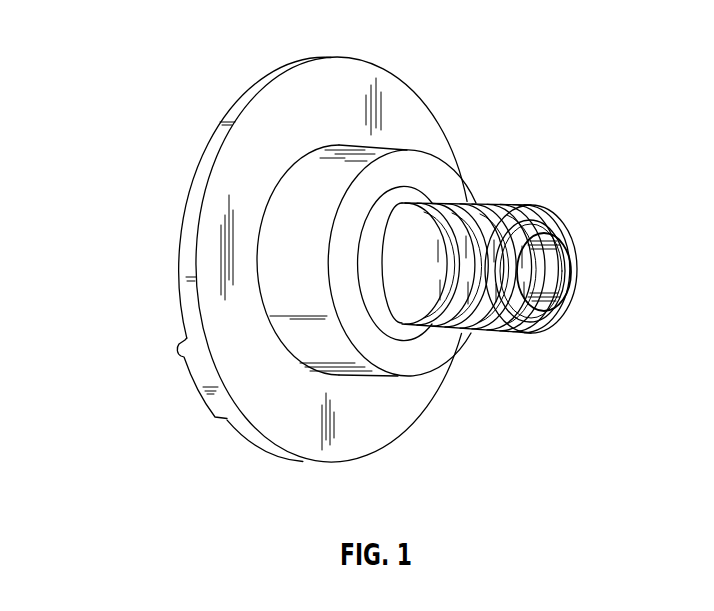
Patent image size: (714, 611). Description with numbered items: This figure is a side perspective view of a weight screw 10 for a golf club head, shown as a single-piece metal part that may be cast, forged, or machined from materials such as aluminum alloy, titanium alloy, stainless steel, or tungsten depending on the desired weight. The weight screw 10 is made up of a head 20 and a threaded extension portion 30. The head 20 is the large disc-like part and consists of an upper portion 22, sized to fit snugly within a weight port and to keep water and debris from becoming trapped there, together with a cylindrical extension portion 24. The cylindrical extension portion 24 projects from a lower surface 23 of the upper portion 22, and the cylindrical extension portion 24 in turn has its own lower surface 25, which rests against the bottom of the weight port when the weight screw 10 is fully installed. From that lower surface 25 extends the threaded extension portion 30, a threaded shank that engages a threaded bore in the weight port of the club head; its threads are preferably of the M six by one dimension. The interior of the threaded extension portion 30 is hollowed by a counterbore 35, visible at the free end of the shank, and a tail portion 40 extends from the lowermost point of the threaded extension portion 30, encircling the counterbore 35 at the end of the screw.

The weight screw 10 is at (125, 80).
The head 20 is at (444, 122).
The upper portion 22 is at (327, 57).
The lower surface 23 is at (244, 133).
The cylindrical extension portion 24 is at (285, 333).
The lower surface 25 is at (443, 345).
The threaded extension portion 30 is at (566, 226).
The counterbore 35 is at (558, 272).
The tail portion 40 is at (537, 318).